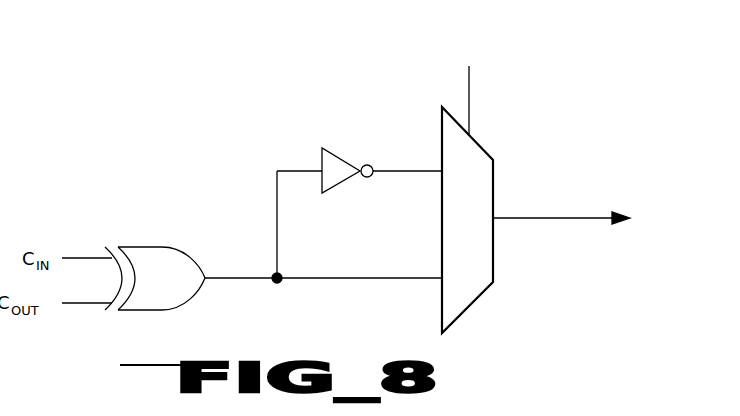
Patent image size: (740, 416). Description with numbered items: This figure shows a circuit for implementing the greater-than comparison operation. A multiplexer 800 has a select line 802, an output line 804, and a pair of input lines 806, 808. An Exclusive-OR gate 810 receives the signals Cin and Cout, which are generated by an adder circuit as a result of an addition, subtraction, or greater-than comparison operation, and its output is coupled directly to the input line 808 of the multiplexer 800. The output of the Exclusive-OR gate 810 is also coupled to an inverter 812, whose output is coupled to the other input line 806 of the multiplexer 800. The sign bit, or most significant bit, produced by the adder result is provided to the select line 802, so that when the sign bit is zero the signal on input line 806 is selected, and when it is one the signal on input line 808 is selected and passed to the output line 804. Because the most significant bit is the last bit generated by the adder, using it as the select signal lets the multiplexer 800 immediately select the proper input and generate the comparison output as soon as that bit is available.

The multiplexer 800 is at (483, 230).
The select line 802 is at (470, 98).
The output line 804 is at (545, 215).
The input line 806 is at (400, 166).
The input line 808 is at (355, 282).
The Exclusive-OR gate 810 is at (178, 291).
The inverter 812 is at (342, 150).